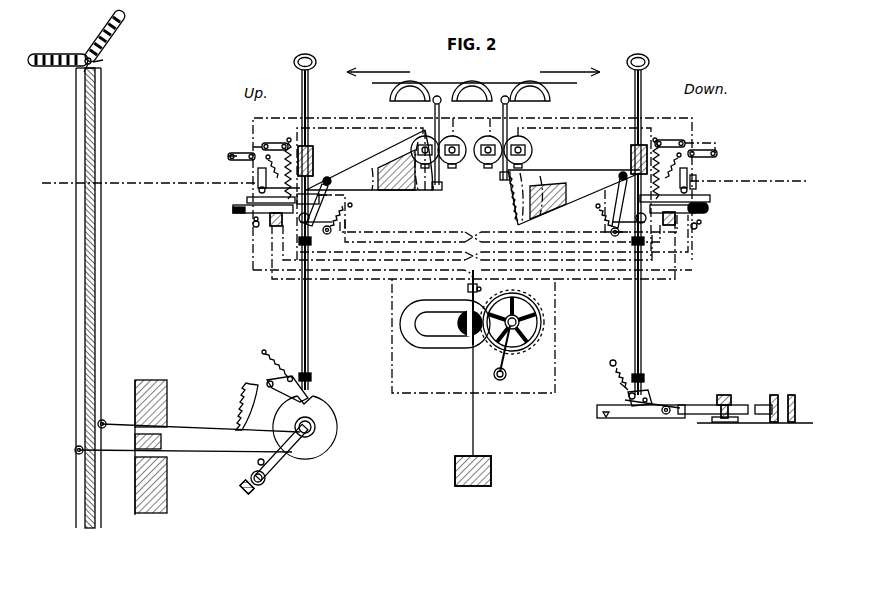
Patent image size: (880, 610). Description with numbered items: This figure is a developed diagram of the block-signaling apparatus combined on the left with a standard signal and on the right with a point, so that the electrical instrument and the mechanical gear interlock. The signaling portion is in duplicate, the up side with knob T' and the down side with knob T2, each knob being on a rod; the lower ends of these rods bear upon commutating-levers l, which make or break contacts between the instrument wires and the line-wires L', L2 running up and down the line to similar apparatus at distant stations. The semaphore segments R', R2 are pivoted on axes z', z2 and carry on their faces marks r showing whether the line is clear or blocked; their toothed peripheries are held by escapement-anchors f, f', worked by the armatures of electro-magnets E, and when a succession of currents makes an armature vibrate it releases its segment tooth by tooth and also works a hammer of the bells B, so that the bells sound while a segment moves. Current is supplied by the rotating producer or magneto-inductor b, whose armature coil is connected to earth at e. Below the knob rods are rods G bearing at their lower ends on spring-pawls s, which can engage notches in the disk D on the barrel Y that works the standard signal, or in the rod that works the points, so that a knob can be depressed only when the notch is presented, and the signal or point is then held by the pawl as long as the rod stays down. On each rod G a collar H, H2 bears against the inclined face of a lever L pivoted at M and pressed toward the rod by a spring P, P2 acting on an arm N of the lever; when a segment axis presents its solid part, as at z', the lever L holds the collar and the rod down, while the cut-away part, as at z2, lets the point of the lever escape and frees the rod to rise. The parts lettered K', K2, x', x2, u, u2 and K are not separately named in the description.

The knob T' is at (305, 214).
The knob T2 is at (638, 217).
The bells B is at (473, 74).
The electro-magnet E is at (470, 91).
The electromagnets first pair K' is at (438, 150).
The electromagnets second pair K2 is at (526, 132).
The escapement-anchor f is at (440, 143).
The escapement-anchor f' is at (501, 141).
The semaphore segment R' is at (369, 160).
The semaphore segment R2 is at (574, 197).
The line-wire L' is at (150, 176).
The line-wire L2 is at (749, 174).
The up lever sleeve x' is at (311, 161).
The down lever sleeve x2 is at (631, 158).
The segment axis z' is at (331, 182).
The segment axis z2 is at (617, 172).
The commutating-lever l is at (308, 205).
The collar H is at (289, 222).
The collar H2 is at (662, 220).
The contact stud u is at (252, 222).
The contact stud down side u2 is at (698, 227).
The lever pivot M is at (318, 209).
The lever arm N is at (619, 210).
The spring P is at (341, 214).
The spring P2 is at (601, 215).
The lever L is at (324, 198).
The rod G is at (458, 324).
The spring-pawl s is at (621, 385).
The disk D is at (305, 427).
The barrel Y is at (305, 427).
The crank pin K is at (274, 459).
The signal mark r is at (262, 458).
The magneto-inductor b is at (445, 324).
The earth connection e is at (477, 415).